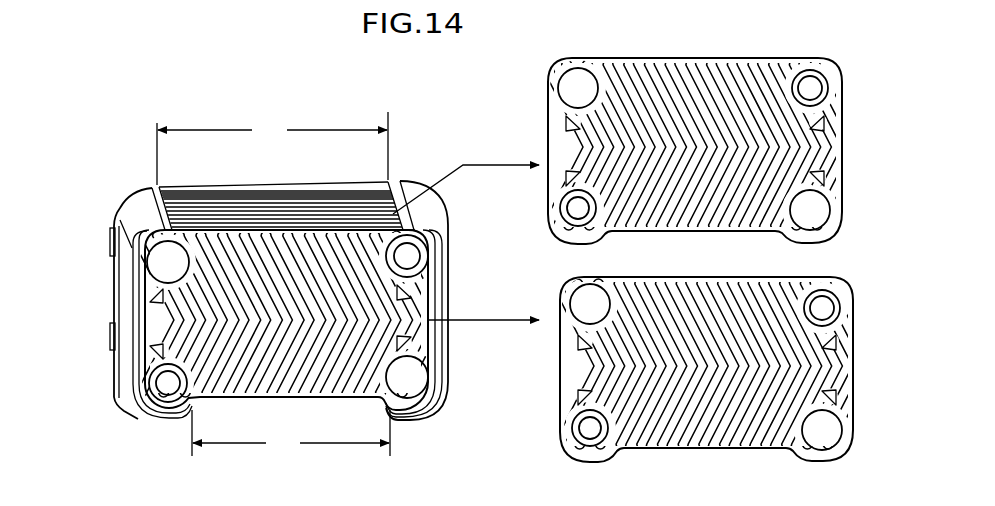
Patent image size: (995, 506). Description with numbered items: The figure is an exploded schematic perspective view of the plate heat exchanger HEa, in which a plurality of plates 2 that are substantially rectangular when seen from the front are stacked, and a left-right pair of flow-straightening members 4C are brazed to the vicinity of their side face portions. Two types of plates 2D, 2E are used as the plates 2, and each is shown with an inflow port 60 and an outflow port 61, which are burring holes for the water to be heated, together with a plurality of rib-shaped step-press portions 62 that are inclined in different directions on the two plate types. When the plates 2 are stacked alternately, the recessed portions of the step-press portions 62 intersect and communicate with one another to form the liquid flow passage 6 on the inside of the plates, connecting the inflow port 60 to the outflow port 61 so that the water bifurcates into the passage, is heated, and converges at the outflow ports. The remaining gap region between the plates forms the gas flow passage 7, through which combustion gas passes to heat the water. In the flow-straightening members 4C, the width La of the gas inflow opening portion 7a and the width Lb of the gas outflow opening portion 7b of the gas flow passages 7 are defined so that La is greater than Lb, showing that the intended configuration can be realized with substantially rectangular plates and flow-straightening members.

The plate heat exchanger HEa is at (112, 168).
The flow-straightening members 4C is at (122, 215).
The liquid flow passage 6 is at (183, 189).
The plate 2 is at (247, 200).
The gas flow passage 7 is at (297, 200).
The gas inflow opening portion 7a is at (360, 183).
The gas outflow opening portion 7b is at (293, 398).
The plate 2D is at (440, 358).
The plate 2E is at (776, 59).
The inflow port 60 is at (165, 386).
The outflow port 61 is at (410, 258).
The step-press portions 62 is at (720, 72).
The width of gas inflow opening portion La is at (272, 148).
The width of gas outflow opening portion Lb is at (291, 433).